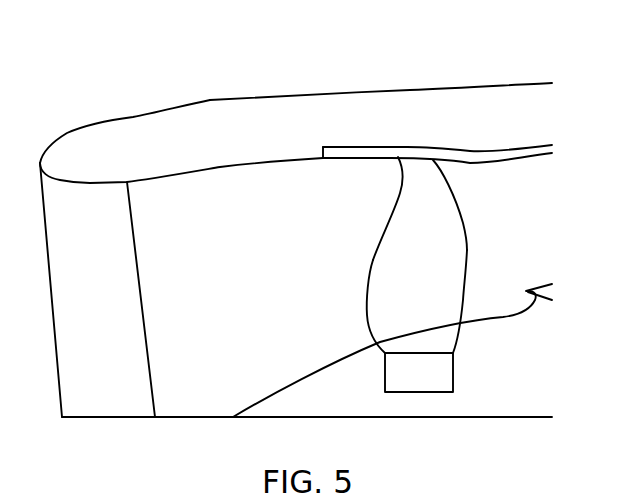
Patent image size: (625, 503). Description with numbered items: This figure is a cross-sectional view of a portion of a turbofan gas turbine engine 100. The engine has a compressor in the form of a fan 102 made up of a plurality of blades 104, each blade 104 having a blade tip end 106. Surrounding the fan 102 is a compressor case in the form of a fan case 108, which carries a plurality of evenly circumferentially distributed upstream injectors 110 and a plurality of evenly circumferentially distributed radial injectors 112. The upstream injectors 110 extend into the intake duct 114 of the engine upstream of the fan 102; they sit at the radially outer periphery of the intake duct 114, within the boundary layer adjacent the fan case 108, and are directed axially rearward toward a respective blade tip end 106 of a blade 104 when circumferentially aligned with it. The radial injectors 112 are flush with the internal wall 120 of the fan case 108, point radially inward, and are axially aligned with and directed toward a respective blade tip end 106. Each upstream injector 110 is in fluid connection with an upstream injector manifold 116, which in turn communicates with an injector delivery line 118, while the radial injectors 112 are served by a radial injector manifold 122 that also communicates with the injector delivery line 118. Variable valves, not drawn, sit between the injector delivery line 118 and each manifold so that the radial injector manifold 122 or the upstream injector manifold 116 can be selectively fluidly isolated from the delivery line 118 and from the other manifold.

The gas turbine engine 100 is at (128, 71).
The fan 102 is at (447, 213).
The blade 104 is at (447, 267).
The blade tip end 106 is at (445, 162).
The fan case 108 is at (357, 148).
The upstream injector 110 is at (390, 163).
The radial injector 112 is at (413, 166).
The intake duct 114 is at (212, 358).
The upstream injector manifold 116 is at (390, 156).
The injector delivery line 118 is at (513, 148).
The internal wall 120 is at (322, 147).
The radial injector manifold 122 is at (432, 177).